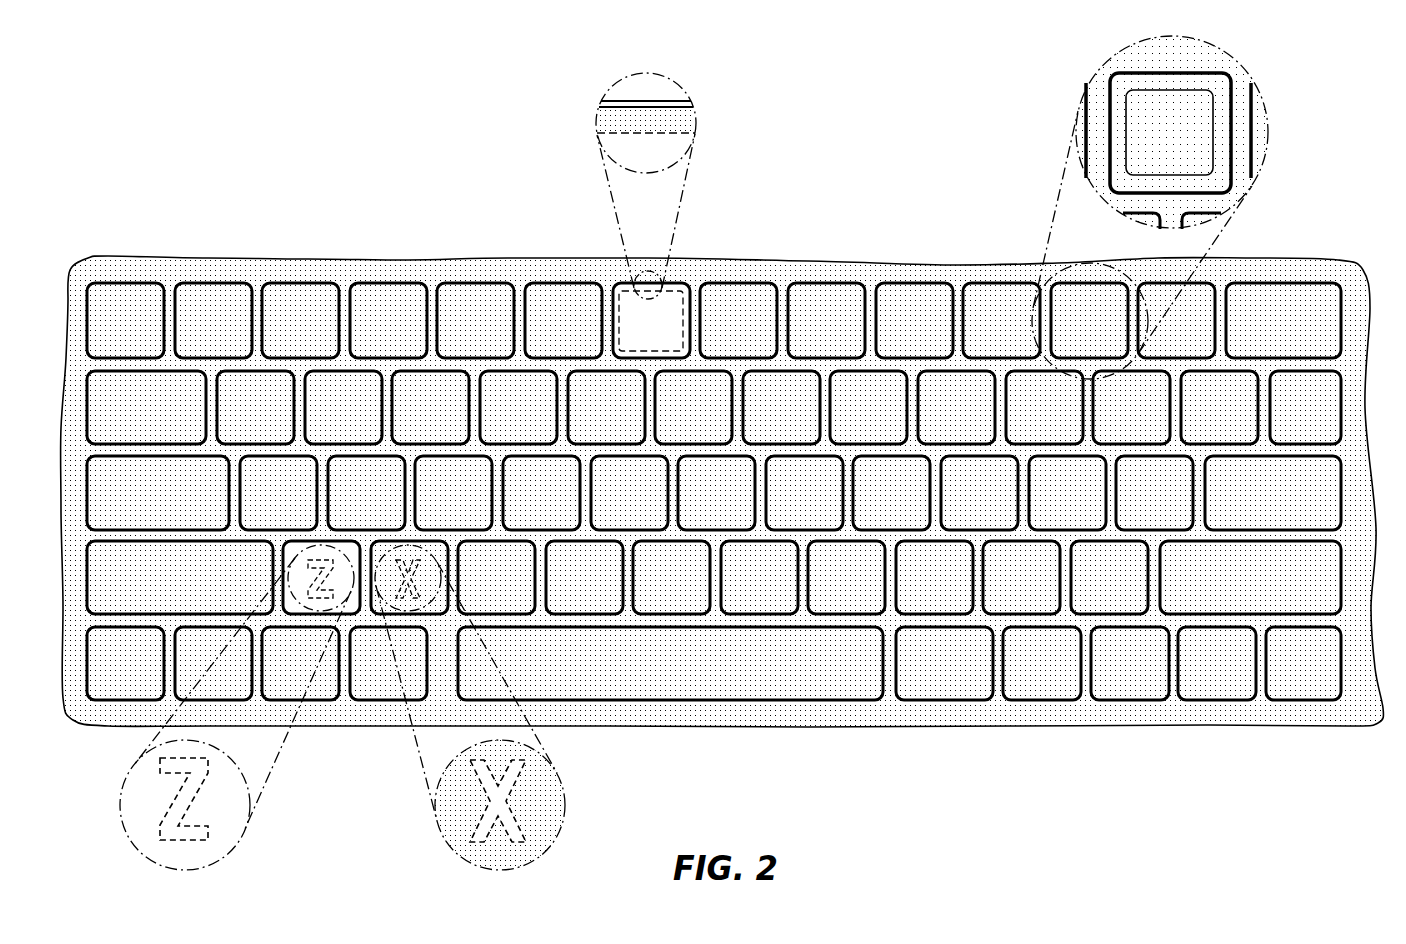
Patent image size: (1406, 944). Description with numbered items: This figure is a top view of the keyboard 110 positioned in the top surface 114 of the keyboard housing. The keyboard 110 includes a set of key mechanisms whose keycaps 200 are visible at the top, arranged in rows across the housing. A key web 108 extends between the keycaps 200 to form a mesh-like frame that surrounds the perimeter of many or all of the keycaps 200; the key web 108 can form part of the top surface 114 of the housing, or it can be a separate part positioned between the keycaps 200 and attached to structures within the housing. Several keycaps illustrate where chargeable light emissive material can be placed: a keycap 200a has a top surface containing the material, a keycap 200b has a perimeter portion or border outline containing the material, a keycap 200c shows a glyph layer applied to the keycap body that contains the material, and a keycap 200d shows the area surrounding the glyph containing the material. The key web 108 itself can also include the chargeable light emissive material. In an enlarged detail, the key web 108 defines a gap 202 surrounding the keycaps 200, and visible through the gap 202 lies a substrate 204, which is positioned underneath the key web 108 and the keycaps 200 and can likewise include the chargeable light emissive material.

The keyboard 110 is at (105, 173).
The key web 108 is at (948, 283).
The top surface 114 is at (1355, 307).
The keycaps 200 is at (280, 310).
The keycap 200a is at (553, 297).
The keycap 200b is at (657, 302).
The keycap 200c is at (308, 590).
The keycap 200d is at (402, 597).
The gap 202 is at (1112, 108).
The substrate 204 is at (1115, 125).